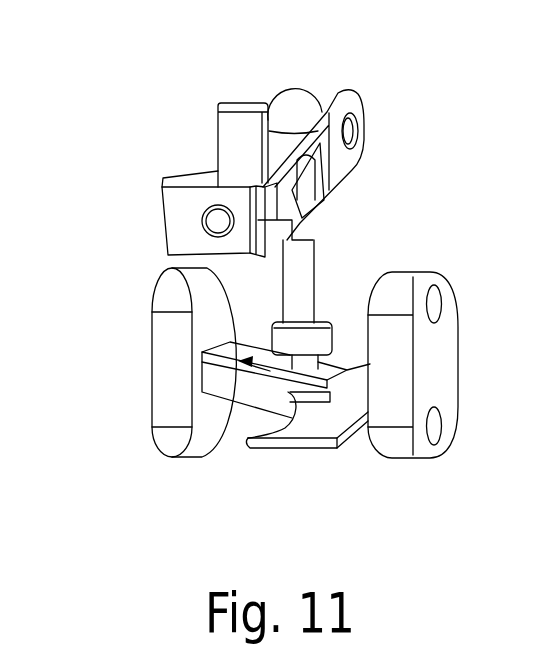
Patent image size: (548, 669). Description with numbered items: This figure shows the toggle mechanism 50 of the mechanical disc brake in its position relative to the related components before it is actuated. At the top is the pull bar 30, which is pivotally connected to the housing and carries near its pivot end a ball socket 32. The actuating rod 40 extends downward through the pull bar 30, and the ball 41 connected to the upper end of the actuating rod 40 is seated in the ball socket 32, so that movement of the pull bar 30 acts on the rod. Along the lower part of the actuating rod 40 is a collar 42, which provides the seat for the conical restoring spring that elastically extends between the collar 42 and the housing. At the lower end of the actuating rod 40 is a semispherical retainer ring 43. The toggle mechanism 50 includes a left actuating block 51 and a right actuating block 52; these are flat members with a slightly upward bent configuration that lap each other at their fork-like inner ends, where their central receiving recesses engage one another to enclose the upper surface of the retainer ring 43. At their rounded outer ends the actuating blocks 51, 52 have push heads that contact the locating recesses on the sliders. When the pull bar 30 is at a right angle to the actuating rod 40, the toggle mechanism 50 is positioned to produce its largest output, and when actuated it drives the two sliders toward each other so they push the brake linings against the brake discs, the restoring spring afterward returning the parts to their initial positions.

The pull bar 30 is at (182, 202).
The ball 41 is at (322, 113).
The ball socket 32 is at (328, 132).
The actuating rod 40 is at (303, 272).
The collar 42 is at (313, 342).
The toggle mechanism 50 is at (202, 353).
The left actuating block 51 is at (252, 400).
The right actuating block 52 is at (310, 427).
The semispherical retainer ring 43 is at (335, 442).